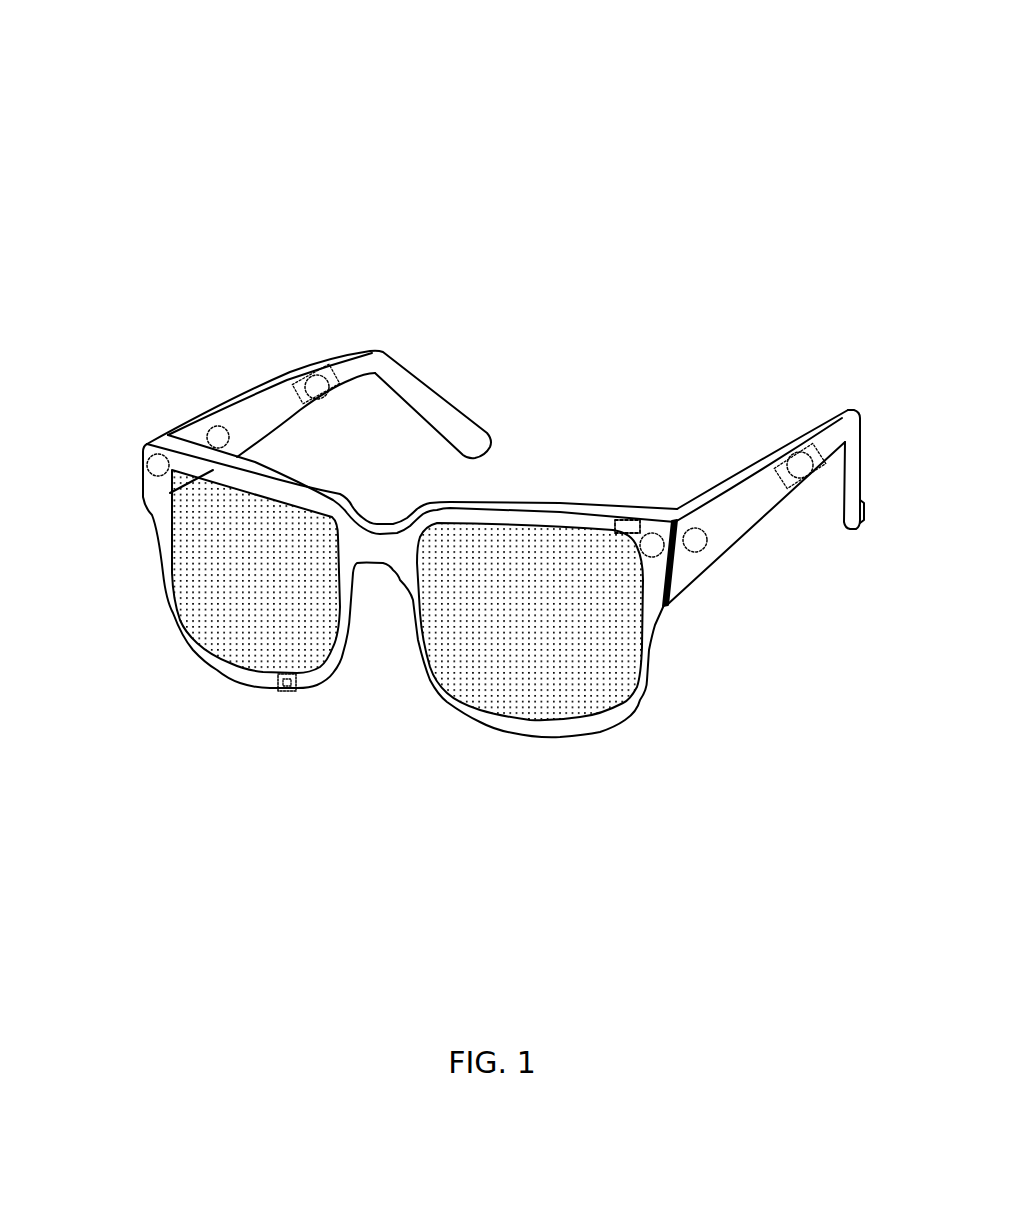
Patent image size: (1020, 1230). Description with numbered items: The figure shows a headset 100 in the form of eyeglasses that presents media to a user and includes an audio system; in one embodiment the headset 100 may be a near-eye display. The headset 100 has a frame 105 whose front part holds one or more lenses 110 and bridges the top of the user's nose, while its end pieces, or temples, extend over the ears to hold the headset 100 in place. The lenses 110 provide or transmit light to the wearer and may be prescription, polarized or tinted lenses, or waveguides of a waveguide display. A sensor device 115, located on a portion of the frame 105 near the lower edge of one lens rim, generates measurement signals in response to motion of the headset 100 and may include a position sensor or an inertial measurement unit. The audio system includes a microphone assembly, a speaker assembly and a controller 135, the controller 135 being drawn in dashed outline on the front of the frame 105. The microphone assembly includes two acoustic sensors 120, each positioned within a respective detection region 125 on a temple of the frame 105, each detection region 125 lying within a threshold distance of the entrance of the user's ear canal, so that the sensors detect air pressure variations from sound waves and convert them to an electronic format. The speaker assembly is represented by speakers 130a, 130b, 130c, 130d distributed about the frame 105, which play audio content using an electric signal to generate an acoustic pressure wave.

The headset 100 is at (116, 61).
The frame 105 is at (390, 350).
The lens 110 is at (197, 552).
The sensor device 115 is at (275, 684).
The acoustic sensor 120 is at (800, 460).
The detection region 125 is at (820, 445).
The speaker 130a is at (220, 427).
The speaker 130b is at (150, 466).
The speaker 130c is at (655, 556).
The speaker 130d is at (707, 548).
The controller 135 is at (628, 518).